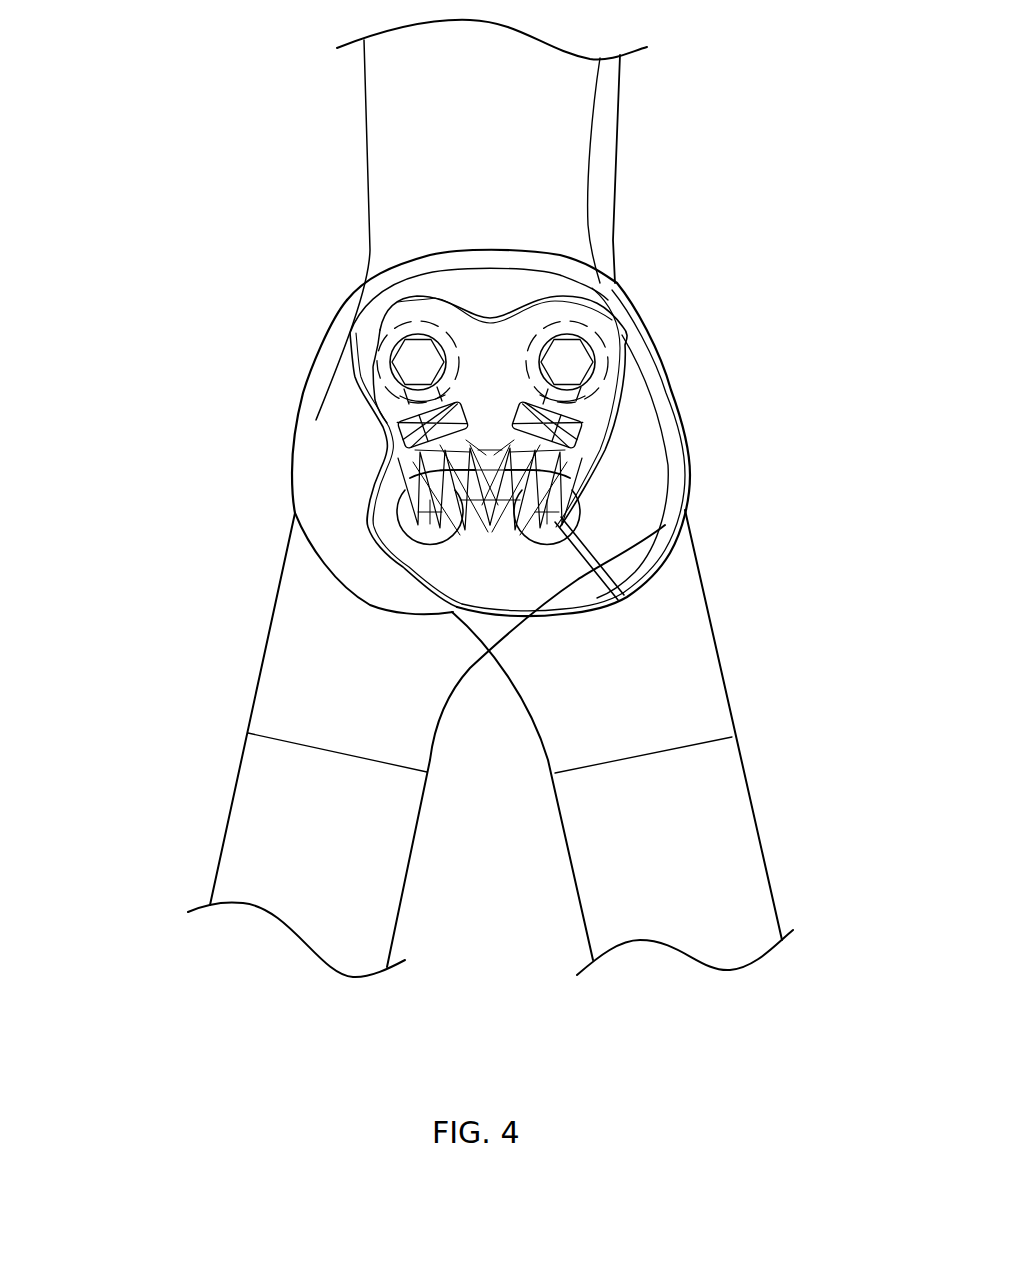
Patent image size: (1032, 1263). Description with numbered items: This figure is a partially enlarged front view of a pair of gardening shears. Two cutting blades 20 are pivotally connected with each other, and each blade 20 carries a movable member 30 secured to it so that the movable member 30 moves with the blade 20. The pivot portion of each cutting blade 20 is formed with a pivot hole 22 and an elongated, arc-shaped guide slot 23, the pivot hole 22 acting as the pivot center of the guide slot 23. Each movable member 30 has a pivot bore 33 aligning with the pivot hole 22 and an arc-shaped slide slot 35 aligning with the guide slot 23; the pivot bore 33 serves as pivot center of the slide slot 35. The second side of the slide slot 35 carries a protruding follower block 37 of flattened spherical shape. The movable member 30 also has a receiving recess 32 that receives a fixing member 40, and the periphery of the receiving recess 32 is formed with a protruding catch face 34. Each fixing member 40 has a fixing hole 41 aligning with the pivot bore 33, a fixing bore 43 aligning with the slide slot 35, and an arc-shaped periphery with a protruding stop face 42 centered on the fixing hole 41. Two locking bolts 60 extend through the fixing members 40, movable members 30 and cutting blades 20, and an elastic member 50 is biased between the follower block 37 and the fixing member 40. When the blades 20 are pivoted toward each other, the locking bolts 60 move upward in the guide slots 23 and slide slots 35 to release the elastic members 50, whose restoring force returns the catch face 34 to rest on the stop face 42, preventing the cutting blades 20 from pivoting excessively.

The cutting blade 20 is at (220, 853).
The pivot hole 22 is at (490, 425).
The guide slot 23 is at (492, 362).
The movable member 30 is at (660, 396).
The receiving recess 32 is at (382, 583).
The pivot bore 33 is at (492, 395).
The catch face 34 is at (539, 692).
The slide slot 35 is at (484, 372).
The follower block 37 is at (428, 510).
The fixing member 40 is at (367, 506).
The fixing hole 41 is at (410, 355).
The stop face 42 is at (592, 565).
The fixing bore 43 is at (567, 355).
The elastic member 50 is at (580, 478).
The locking bolt 60 is at (484, 246).